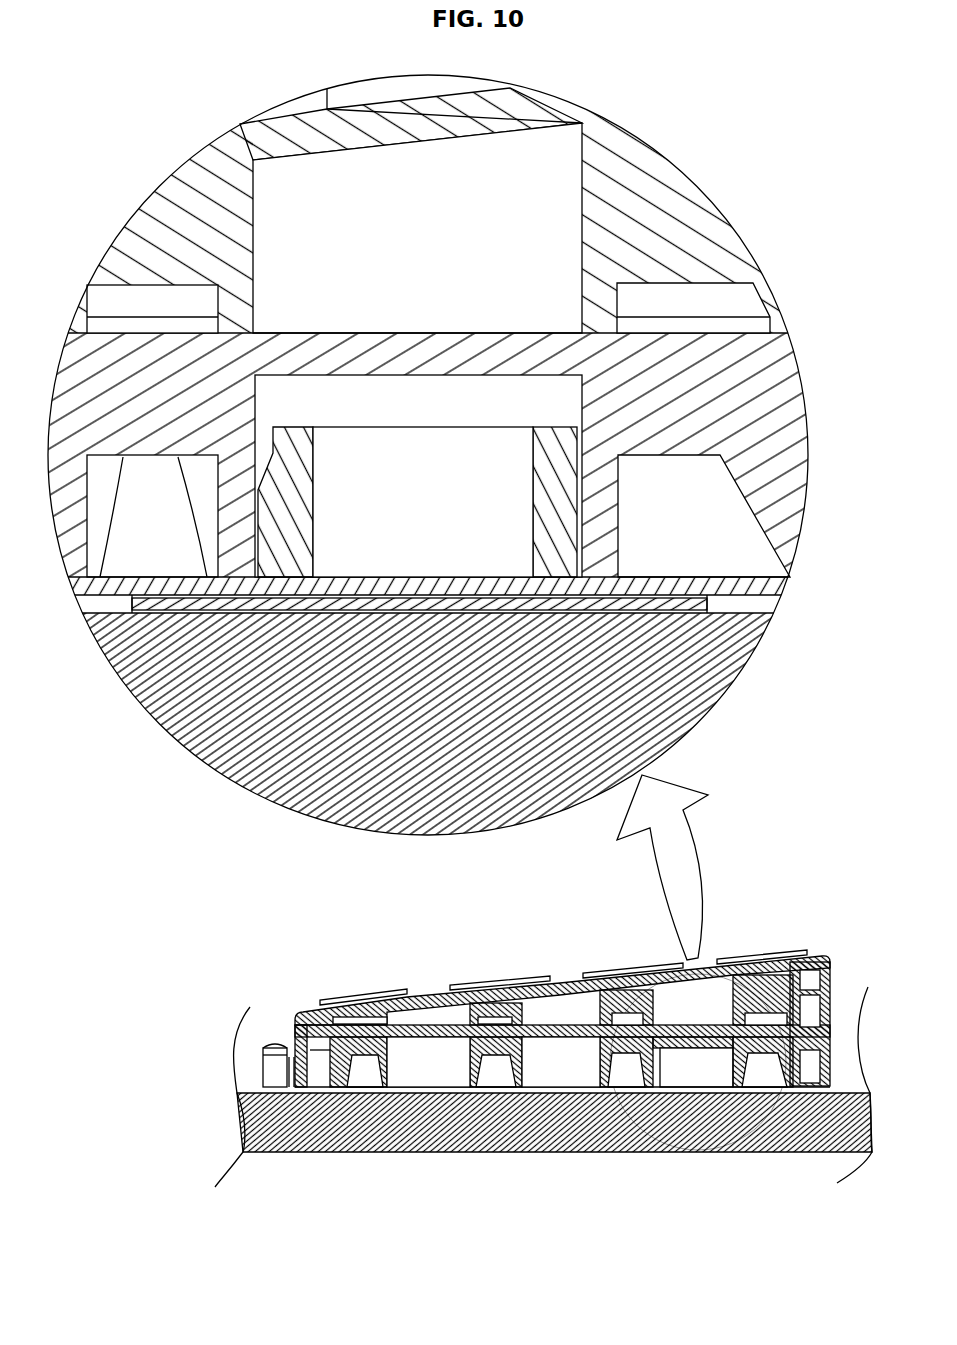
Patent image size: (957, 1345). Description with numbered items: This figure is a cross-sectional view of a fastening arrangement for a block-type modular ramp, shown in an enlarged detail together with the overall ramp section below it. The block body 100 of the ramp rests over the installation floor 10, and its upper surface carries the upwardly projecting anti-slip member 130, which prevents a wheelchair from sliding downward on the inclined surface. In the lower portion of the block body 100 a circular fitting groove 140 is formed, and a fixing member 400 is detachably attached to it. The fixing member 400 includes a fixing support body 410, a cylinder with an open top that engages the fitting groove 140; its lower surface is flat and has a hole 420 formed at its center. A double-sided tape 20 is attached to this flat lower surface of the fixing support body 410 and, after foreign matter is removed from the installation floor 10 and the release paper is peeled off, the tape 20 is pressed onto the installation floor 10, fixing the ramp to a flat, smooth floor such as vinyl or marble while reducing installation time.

The installation floor 10 is at (293, 782).
The double-sided tape 20 is at (373, 627).
The block body 100 is at (422, 1063).
The anti-slip member 130 is at (347, 1003).
The fitting groove 140 is at (423, 402).
The fixing member 400 is at (298, 603).
The fixing support body 410 is at (563, 457).
The hole 420 is at (442, 590).